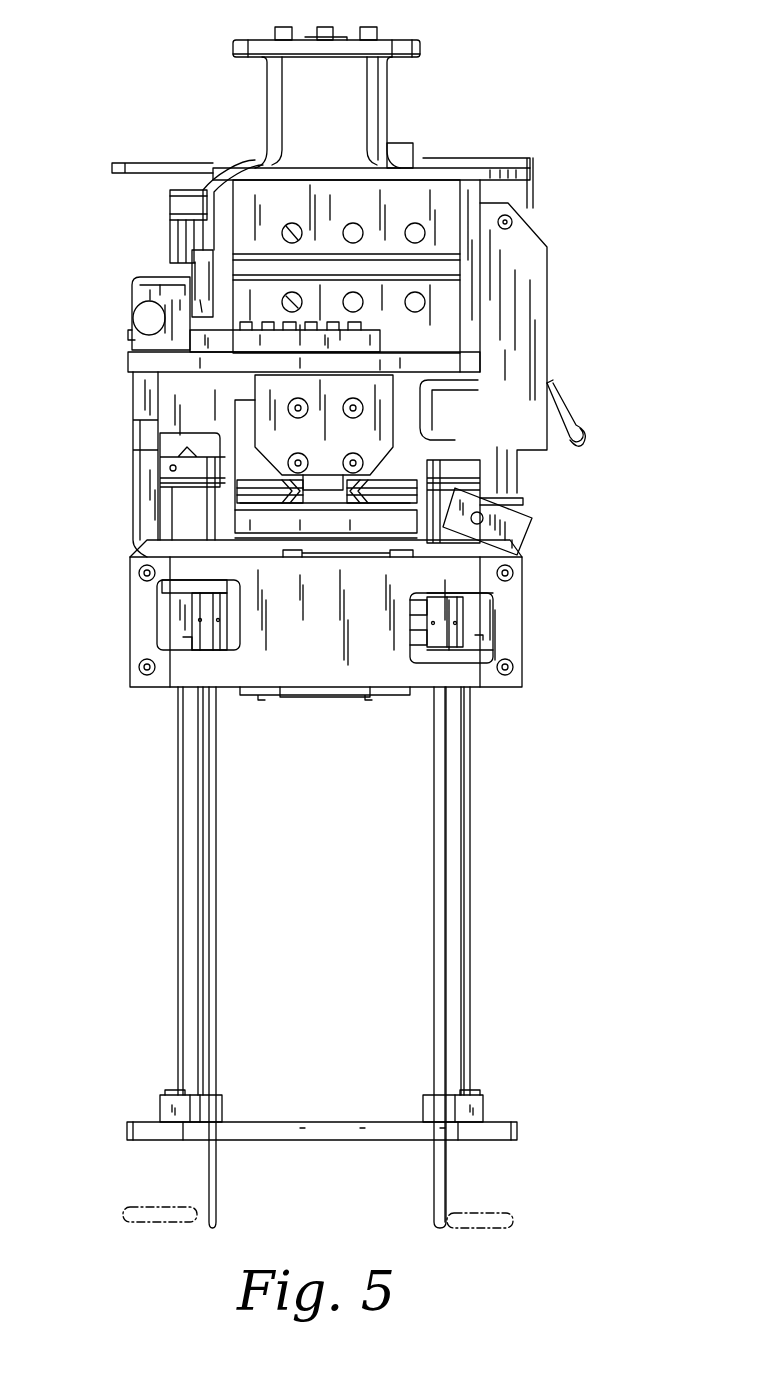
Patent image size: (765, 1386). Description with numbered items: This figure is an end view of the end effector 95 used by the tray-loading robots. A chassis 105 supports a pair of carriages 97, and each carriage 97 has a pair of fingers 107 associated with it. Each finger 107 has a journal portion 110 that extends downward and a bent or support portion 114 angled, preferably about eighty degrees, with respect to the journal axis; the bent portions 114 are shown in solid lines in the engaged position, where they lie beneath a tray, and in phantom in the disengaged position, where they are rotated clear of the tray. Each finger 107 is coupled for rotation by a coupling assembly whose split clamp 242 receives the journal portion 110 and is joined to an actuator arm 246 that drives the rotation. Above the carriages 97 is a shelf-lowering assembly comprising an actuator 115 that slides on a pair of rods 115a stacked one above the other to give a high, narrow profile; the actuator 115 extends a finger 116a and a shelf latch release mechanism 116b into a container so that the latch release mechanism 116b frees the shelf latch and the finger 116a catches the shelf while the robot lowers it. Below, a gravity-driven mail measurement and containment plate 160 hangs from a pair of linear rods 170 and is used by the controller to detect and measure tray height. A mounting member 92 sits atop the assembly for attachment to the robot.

The end effector 95 is at (533, 62).
The mounting spool / tool holder 92 is at (386, 113).
The actuator 115 is at (407, 200).
The rods 115a is at (185, 327).
The chassis 105 is at (387, 363).
The finger 116a is at (640, 378).
The shelf latch release mechanism 116b is at (513, 523).
The carriage 97 is at (360, 653).
The actuator arm 246 is at (187, 590).
The clamp 242 is at (193, 617).
The journal portion 110 is at (205, 712).
The linear rods 170 is at (178, 868).
The fingers 107 is at (215, 900).
The mail measurement and containment plate 160 is at (287, 1125).
The bent portion 114 is at (157, 1203).